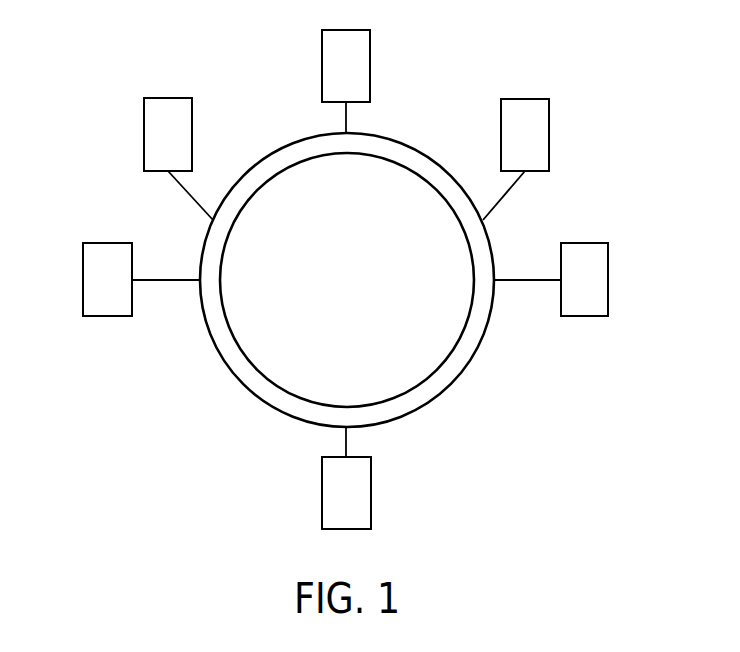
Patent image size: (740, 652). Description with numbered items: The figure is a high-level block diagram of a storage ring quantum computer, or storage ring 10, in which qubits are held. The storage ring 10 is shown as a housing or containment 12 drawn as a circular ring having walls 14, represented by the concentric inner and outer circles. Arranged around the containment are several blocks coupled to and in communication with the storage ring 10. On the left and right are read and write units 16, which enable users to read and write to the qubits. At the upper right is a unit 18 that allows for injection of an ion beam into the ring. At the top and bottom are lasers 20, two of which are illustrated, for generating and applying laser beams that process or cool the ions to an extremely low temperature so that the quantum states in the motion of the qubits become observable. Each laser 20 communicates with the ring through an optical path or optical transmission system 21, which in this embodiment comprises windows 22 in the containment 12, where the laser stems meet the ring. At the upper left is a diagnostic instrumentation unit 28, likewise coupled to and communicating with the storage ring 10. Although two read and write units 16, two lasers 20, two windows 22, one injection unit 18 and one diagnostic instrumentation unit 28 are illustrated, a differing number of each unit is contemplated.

The storage ring 10 is at (518, 225).
The housing or containment 12 is at (467, 365).
The walls 14 is at (430, 157).
The read and write units 16 is at (83, 286).
The unit 18 is at (549, 136).
The lasers 20 is at (322, 62).
The optical path or optical transmission system 21 is at (346, 121).
The windows 22 is at (346, 131).
The diagnostic instrumentation unit 28 is at (144, 139).